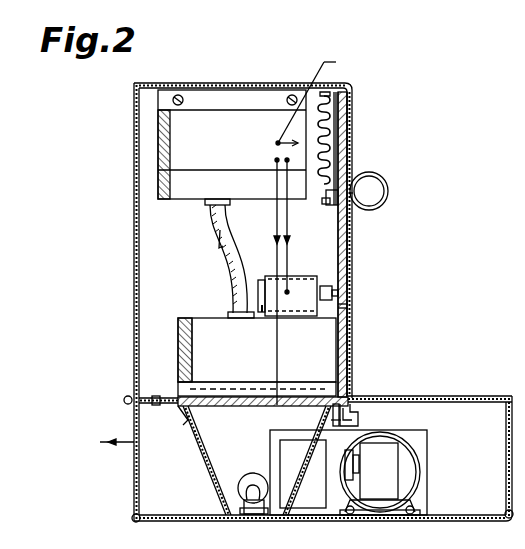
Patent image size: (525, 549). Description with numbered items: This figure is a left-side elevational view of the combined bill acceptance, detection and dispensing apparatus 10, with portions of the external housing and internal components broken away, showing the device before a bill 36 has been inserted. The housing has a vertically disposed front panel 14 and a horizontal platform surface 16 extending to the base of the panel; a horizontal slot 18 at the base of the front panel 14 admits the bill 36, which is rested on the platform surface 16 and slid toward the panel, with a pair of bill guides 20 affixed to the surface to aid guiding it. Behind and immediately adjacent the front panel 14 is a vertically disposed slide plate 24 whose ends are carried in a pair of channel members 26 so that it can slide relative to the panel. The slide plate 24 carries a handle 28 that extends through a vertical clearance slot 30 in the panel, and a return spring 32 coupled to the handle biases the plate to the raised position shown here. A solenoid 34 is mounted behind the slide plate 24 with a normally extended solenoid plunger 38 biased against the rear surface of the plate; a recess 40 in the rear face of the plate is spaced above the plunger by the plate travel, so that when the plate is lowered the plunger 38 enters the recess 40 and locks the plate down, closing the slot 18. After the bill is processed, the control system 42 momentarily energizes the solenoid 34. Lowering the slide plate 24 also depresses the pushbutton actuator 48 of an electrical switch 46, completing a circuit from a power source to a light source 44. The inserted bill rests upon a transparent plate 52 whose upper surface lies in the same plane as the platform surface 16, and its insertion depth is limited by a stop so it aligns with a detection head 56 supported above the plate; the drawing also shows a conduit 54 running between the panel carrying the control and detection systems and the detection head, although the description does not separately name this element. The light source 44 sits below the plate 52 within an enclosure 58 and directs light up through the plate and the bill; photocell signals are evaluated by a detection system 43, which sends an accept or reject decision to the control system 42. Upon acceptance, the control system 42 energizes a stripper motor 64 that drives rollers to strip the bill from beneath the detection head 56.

The combined bill acceptance, detection and dispensing apparatus 10 is at (130, 236).
The front panel 14 is at (352, 156).
The platform surface 16 is at (465, 405).
The horizontal slot 18 is at (350, 397).
The bill guides 20 is at (470, 393).
The slide plate 24 is at (347, 275).
The channel members 26 is at (336, 122).
The handle 28 is at (388, 200).
The vertical clearance slot 30 is at (352, 252).
The return spring 32 is at (340, 168).
The solenoid 34 is at (330, 308).
The bill 36 is at (420, 396).
The solenoid plunger 38 is at (347, 290).
The recess 40 is at (338, 208).
The control system 42 is at (309, 127).
The detection system 43 is at (232, 281).
The light source 44 is at (268, 462).
The electrical switch 46 is at (330, 418).
The pushbutton actuator 48 is at (358, 418).
The transparent plate 52 is at (182, 432).
The conduit 54 is at (178, 398).
The detection head 56 is at (257, 336).
The enclosure 58 is at (303, 474).
The stripper motor 64 is at (405, 490).